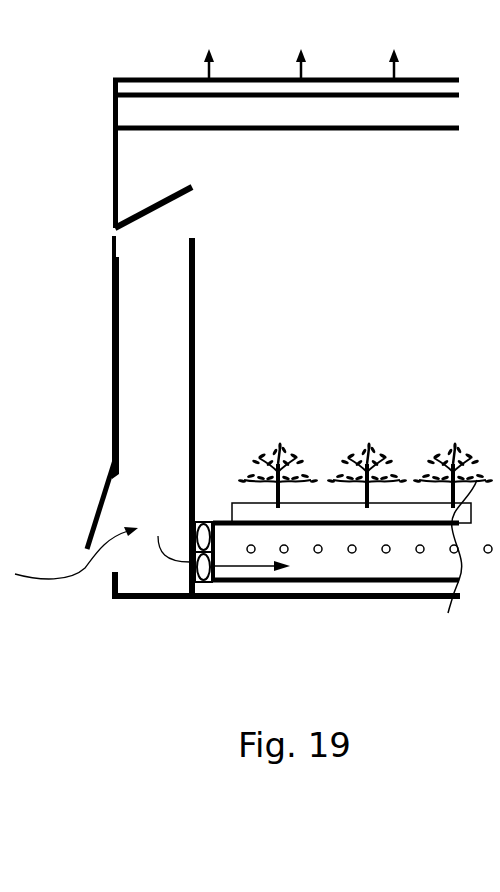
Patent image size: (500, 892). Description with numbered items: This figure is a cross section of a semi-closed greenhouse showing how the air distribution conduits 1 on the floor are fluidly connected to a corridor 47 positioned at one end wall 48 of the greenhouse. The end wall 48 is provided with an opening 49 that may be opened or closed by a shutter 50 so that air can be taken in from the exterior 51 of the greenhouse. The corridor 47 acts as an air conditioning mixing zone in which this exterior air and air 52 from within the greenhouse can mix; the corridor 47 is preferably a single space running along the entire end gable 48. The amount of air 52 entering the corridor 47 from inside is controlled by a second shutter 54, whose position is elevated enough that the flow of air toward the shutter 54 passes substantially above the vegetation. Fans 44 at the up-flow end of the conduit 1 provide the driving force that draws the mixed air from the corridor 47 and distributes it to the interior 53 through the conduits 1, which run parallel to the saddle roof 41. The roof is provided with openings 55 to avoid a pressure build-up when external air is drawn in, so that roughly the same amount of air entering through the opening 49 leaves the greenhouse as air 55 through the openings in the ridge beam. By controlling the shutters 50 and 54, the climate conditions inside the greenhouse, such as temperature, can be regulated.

The air distribution conduit 1 is at (362, 558).
The saddle roof 41 is at (113, 92).
The fans 44 is at (210, 582).
The corridor 47 is at (150, 582).
The end wall 48 is at (113, 129).
The opening 49 is at (110, 556).
The shutter 50 is at (90, 524).
The exterior 51 is at (72, 366).
The air from within the greenhouse 52 is at (152, 276).
The interior 53 is at (407, 316).
The shutter 54 is at (143, 208).
The openings 55 is at (301, 42).